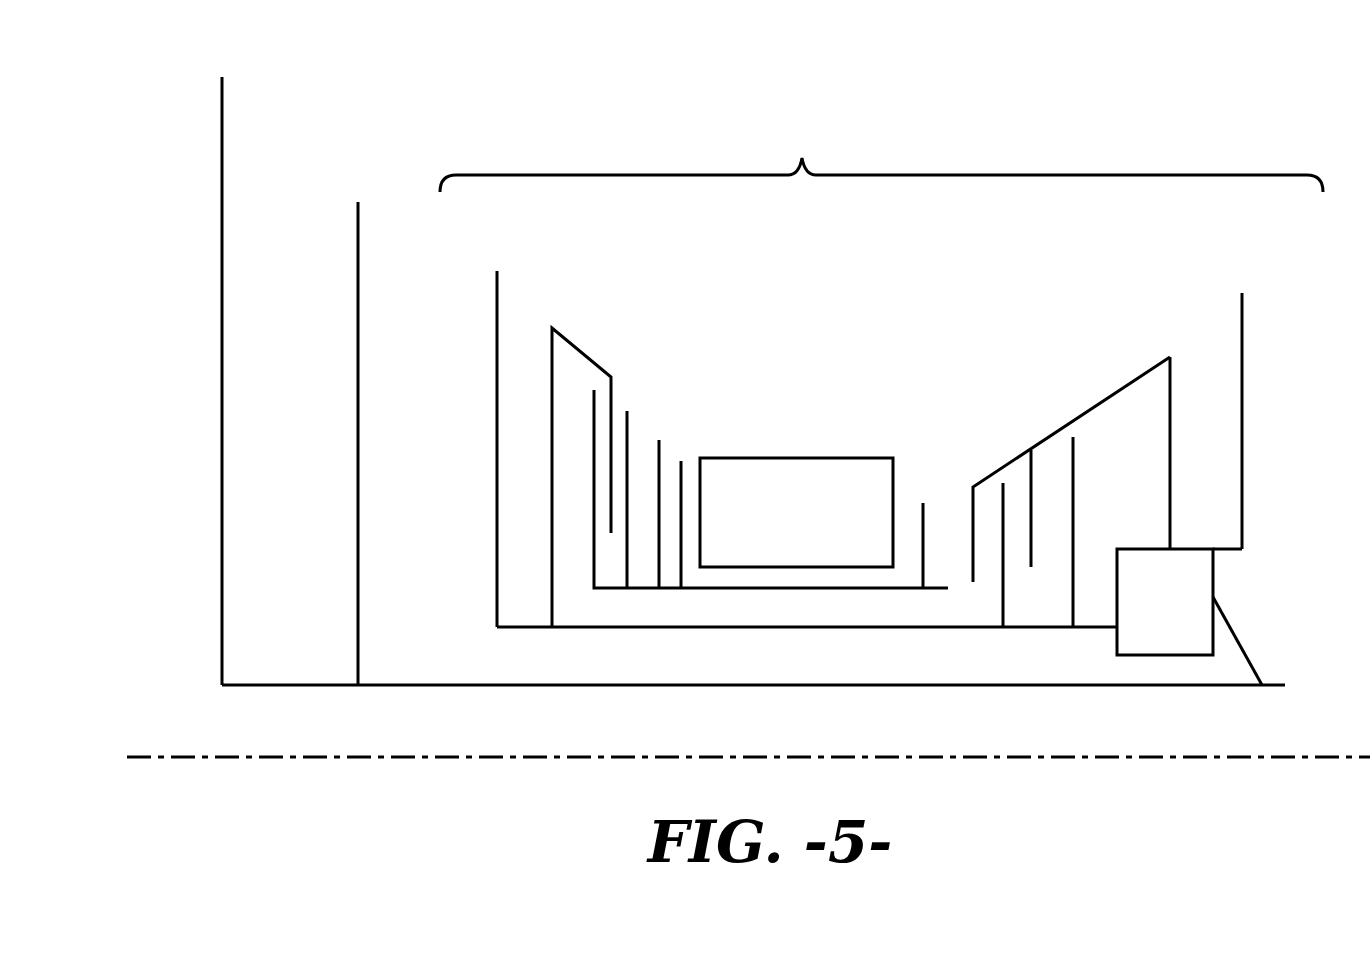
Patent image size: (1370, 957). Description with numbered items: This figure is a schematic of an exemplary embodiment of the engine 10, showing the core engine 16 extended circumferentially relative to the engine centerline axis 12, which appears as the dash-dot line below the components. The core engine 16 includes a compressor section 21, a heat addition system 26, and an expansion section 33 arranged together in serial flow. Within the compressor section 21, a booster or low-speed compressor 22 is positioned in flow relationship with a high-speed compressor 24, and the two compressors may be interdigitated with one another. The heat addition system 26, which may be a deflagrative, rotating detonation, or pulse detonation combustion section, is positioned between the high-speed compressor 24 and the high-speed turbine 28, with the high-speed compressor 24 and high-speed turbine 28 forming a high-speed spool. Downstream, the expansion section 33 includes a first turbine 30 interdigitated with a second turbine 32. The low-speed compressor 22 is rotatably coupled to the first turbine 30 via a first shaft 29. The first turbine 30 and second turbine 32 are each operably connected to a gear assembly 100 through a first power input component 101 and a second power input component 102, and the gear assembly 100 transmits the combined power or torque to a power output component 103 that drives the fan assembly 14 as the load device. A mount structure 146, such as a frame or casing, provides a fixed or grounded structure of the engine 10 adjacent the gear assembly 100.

The engine 10 is at (943, 113).
The engine centerline axis 12 is at (222, 757).
The fan assembly 14 is at (297, 118).
The core engine 16 is at (884, 431).
The compressor section 21 is at (625, 305).
The low-speed compressor 22 is at (527, 293).
The high-speed compressor 24 is at (643, 420).
The heat addition system 26 is at (796, 512).
The high-speed turbine 28 is at (918, 458).
The first shaft 29 is at (762, 628).
The first turbine 30 is at (1091, 508).
The second turbine 32 is at (1188, 450).
The expansion section 33 is at (1104, 311).
The gear assembly 100 is at (1165, 602).
The first power input component 101 is at (1047, 630).
The second power input component 102 is at (1197, 548).
The power output component 103 is at (1197, 687).
The mount structure 146 is at (1243, 425).